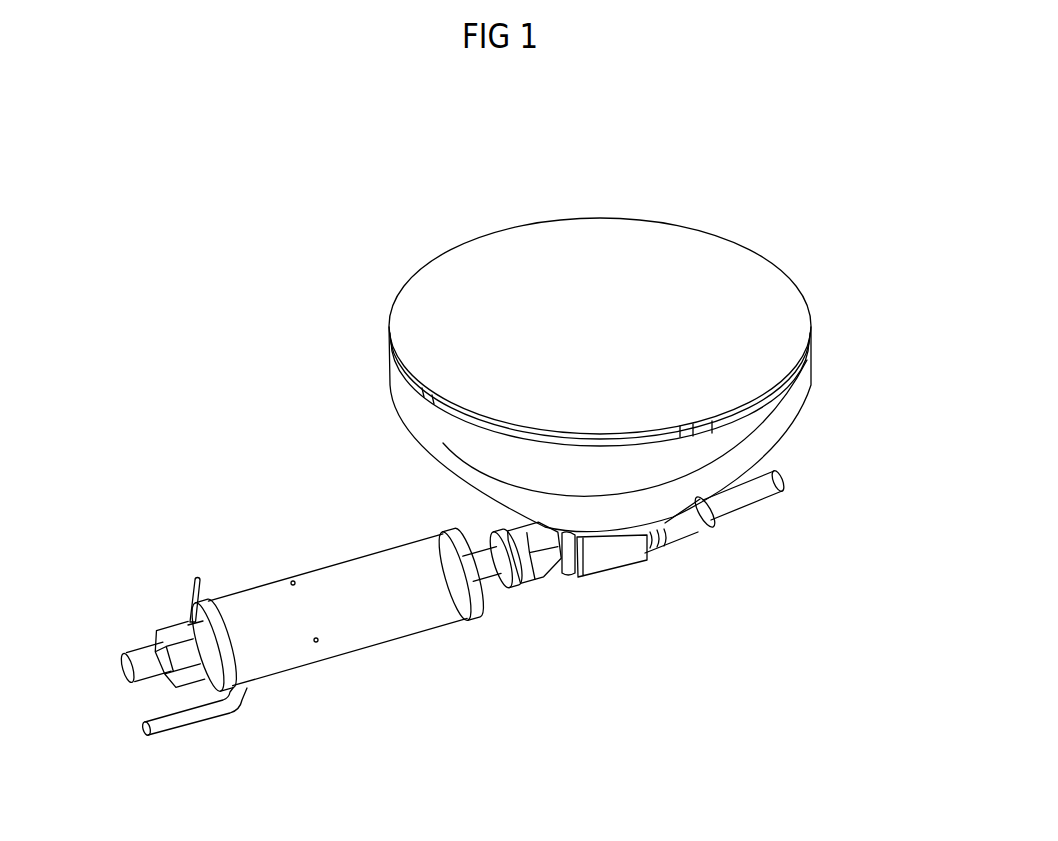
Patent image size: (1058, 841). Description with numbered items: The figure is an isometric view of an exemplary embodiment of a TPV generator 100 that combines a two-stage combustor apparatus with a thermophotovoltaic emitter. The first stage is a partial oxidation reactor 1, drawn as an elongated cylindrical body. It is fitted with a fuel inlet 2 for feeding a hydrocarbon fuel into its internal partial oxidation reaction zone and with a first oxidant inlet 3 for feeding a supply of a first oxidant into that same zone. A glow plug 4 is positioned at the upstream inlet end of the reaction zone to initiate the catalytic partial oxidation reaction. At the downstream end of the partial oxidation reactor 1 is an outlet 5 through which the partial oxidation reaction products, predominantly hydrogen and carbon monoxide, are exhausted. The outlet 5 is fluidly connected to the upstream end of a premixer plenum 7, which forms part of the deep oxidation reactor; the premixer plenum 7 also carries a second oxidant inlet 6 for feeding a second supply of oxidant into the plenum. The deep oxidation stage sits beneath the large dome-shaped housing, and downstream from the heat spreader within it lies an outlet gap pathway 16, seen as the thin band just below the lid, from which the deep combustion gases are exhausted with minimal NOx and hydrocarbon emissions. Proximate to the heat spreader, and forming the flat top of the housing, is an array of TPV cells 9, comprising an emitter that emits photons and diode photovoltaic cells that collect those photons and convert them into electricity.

The TPV generator 100 is at (698, 170).
The array of TPV cells 9 is at (453, 286).
The outlet gap pathway 16 is at (455, 412).
The partial oxidation reactor 1 is at (290, 578).
The fuel inlet 2 is at (180, 583).
The first oxidant inlet 3 is at (136, 733).
The glow plug 4 is at (125, 670).
The outlet 5 is at (483, 577).
The second oxidant inlet 6 is at (797, 482).
The premixer plenum 7 is at (670, 500).